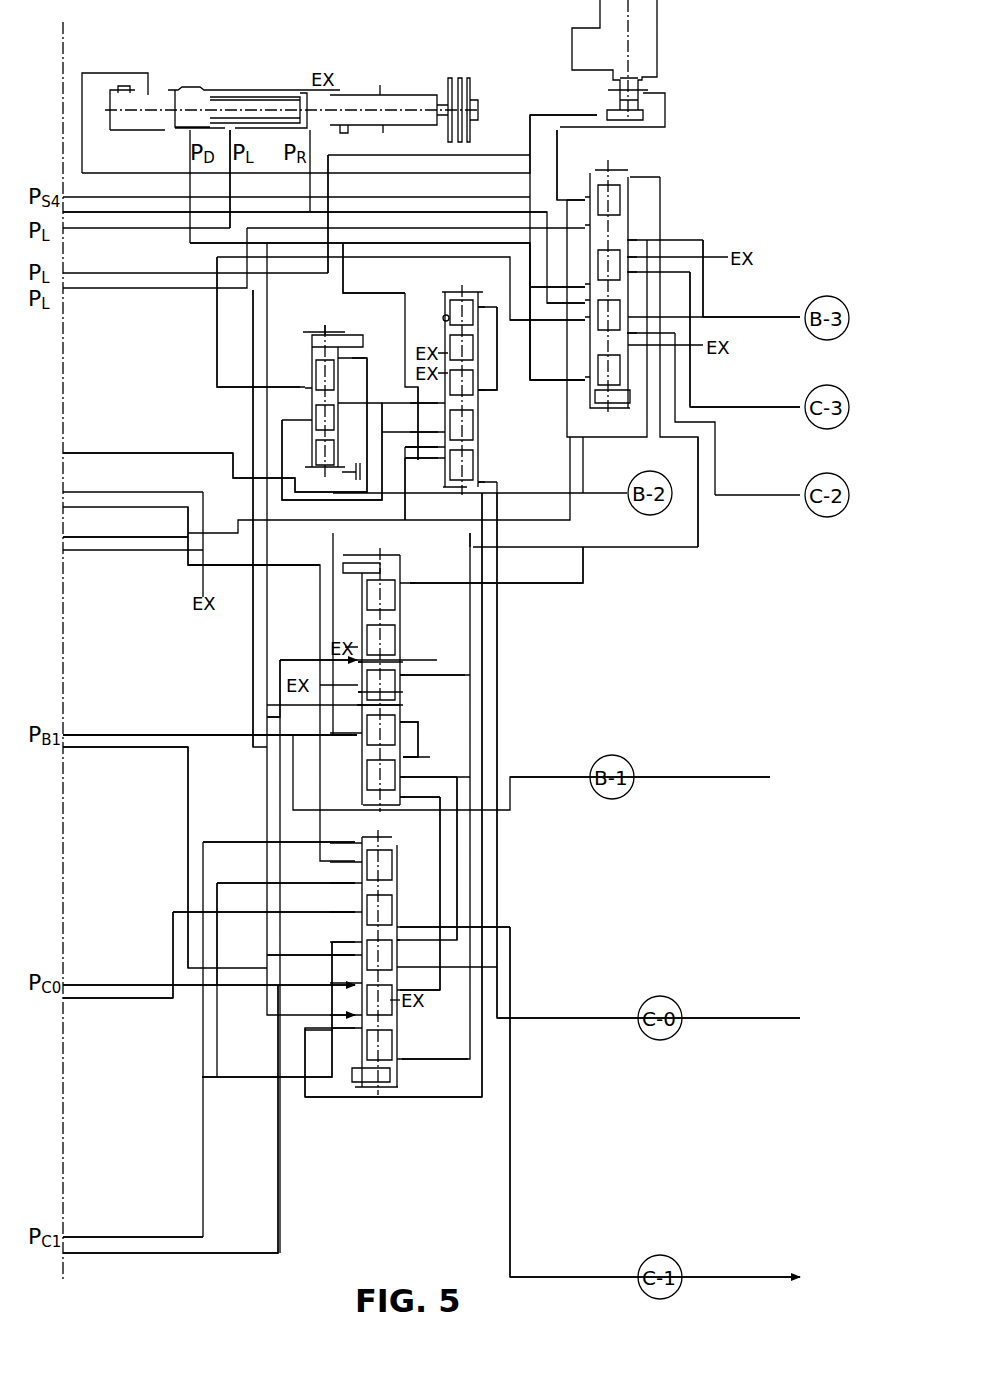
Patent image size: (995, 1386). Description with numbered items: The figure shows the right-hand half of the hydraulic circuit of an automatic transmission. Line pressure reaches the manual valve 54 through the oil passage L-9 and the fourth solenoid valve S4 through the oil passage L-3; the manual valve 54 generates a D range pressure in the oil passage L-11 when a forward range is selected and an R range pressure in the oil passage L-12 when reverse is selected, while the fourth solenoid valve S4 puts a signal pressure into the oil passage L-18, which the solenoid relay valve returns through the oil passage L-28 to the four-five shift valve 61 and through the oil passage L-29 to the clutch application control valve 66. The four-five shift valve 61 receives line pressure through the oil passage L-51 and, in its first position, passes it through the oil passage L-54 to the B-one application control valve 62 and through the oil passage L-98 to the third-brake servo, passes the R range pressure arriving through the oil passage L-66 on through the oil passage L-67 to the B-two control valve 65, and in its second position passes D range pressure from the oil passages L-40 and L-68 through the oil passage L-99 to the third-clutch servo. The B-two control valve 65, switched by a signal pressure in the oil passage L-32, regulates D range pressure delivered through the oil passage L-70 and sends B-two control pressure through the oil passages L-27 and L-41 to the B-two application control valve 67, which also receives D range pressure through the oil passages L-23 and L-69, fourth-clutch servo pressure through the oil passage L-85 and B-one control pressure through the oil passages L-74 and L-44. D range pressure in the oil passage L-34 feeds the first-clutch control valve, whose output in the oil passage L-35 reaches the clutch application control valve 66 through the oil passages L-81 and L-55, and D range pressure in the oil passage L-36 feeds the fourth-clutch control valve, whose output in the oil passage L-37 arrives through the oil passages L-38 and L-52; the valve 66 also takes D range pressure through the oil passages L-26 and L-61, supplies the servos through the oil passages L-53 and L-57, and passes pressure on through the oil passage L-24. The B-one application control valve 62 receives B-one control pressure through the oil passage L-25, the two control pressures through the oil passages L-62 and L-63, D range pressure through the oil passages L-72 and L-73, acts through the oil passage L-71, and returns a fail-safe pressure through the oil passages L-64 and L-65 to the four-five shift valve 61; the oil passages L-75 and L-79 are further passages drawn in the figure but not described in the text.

The manual valve 54 is at (406, 88).
The fourth solenoid valve S4 is at (660, 37).
The 4-5 shift valve 61 is at (632, 163).
The B-1 application control valve 62 is at (412, 560).
The B-2 control valve 65 is at (340, 325).
The clutch application control valve 66 is at (391, 842).
The B-2 application control valve 67 is at (468, 287).
The oil passage L-3 is at (507, 153).
The oil passage L-9 is at (233, 185).
The oil passage L-11 is at (190, 152).
The oil passage L-12 is at (328, 143).
The oil passage L-18 is at (666, 112).
The oil passage L-23 is at (350, 293).
The oil passage L-24 is at (118, 749).
The oil passage L-25 is at (140, 733).
The oil passage L-26 is at (320, 1035).
The oil passage L-27 is at (348, 410).
The oil passage L-28 is at (117, 539).
The oil passage L-29 is at (115, 505).
The oil passage L-32 is at (137, 451).
The oil passage L-34 is at (280, 1195).
The oil passage L-35 is at (137, 1235).
The oil passage L-36 is at (118, 1000).
The oil passage L-37 is at (130, 983).
The oil passage L-38 is at (230, 881).
The oil passage L-40 is at (251, 632).
The oil passage L-41 is at (415, 420).
The oil passage L-44 is at (462, 443).
The oil passage L-51 is at (155, 289).
The oil passage L-52 is at (235, 988).
The oil passage L-53 is at (455, 985).
The oil passage L-54 is at (566, 585).
The oil passage L-55 is at (235, 1079).
The oil passage L-57 is at (512, 936).
The oil passage L-61 is at (305, 912).
The oil passage L-62 is at (438, 865).
The oil passage L-63 is at (458, 850).
The oil passage L-64 is at (443, 673).
The oil passage L-65 is at (683, 549).
The oil passage L-66 is at (370, 212).
The oil passage L-67 is at (548, 327).
The oil passage L-68 is at (410, 246).
The oil passage L-69 is at (491, 391).
The oil passage L-70 is at (276, 430).
The oil passage L-71 is at (419, 728).
The oil passage L-72 is at (297, 704).
The oil passage L-73 is at (293, 658).
The oil passage L-74 is at (327, 555).
The oil passage L-75 is at (420, 470).
The oil passage L-79 is at (440, 1099).
The oil passage L-81 is at (201, 857).
The oil passage L-85 is at (500, 690).
The oil passage L-98 is at (771, 315).
The oil passage L-99 is at (771, 405).